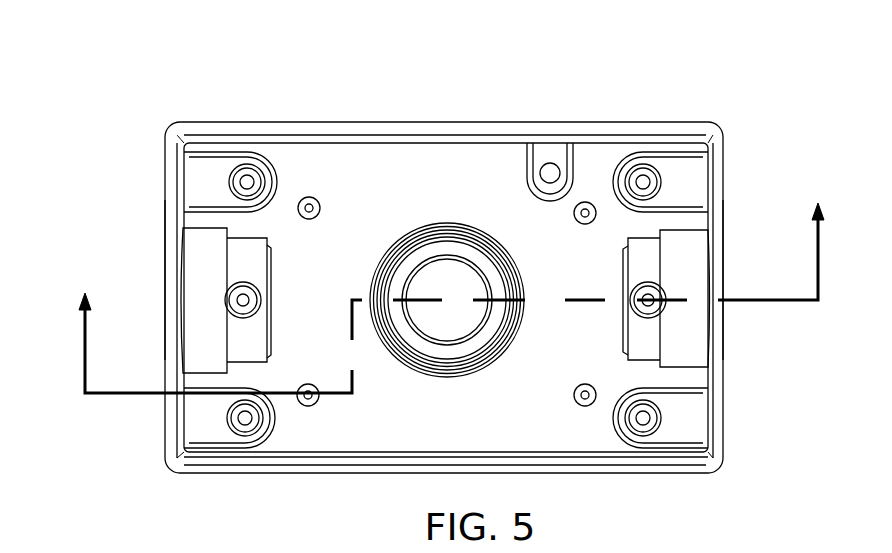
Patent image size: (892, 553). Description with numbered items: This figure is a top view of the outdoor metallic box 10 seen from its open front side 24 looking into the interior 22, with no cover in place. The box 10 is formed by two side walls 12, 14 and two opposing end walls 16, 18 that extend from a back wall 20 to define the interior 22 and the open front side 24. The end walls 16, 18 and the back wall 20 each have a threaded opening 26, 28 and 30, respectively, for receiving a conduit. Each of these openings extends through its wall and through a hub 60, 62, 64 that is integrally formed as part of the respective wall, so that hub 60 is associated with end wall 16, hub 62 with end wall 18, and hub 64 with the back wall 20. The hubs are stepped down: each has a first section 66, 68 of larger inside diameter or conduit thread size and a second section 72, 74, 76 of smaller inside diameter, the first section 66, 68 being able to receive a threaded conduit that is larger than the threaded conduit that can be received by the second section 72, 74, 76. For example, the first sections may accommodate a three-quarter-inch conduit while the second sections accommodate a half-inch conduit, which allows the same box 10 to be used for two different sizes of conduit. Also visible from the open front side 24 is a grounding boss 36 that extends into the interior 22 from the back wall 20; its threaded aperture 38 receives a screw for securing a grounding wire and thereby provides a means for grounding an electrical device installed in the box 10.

The outdoor metallic box 10 is at (230, 63).
The side wall 12 is at (295, 121).
The side wall 14 is at (333, 475).
The end wall 16 is at (725, 168).
The end wall 18 is at (167, 158).
The back wall 20 is at (309, 250).
The interior 22 is at (330, 173).
The open front side 24 is at (688, 130).
The opening 26 is at (737, 272).
The opening 28 is at (165, 272).
The opening 30 is at (463, 278).
The grounding boss 36 is at (563, 162).
The threaded aperture 38 is at (551, 163).
The hub 60 is at (702, 353).
The hub 62 is at (207, 380).
The hub 64 is at (497, 340).
The first section 66 is at (693, 327).
The first section 68 is at (195, 357).
The second section 72 is at (647, 256).
The second section 74 is at (253, 343).
The second section 76 is at (410, 260).